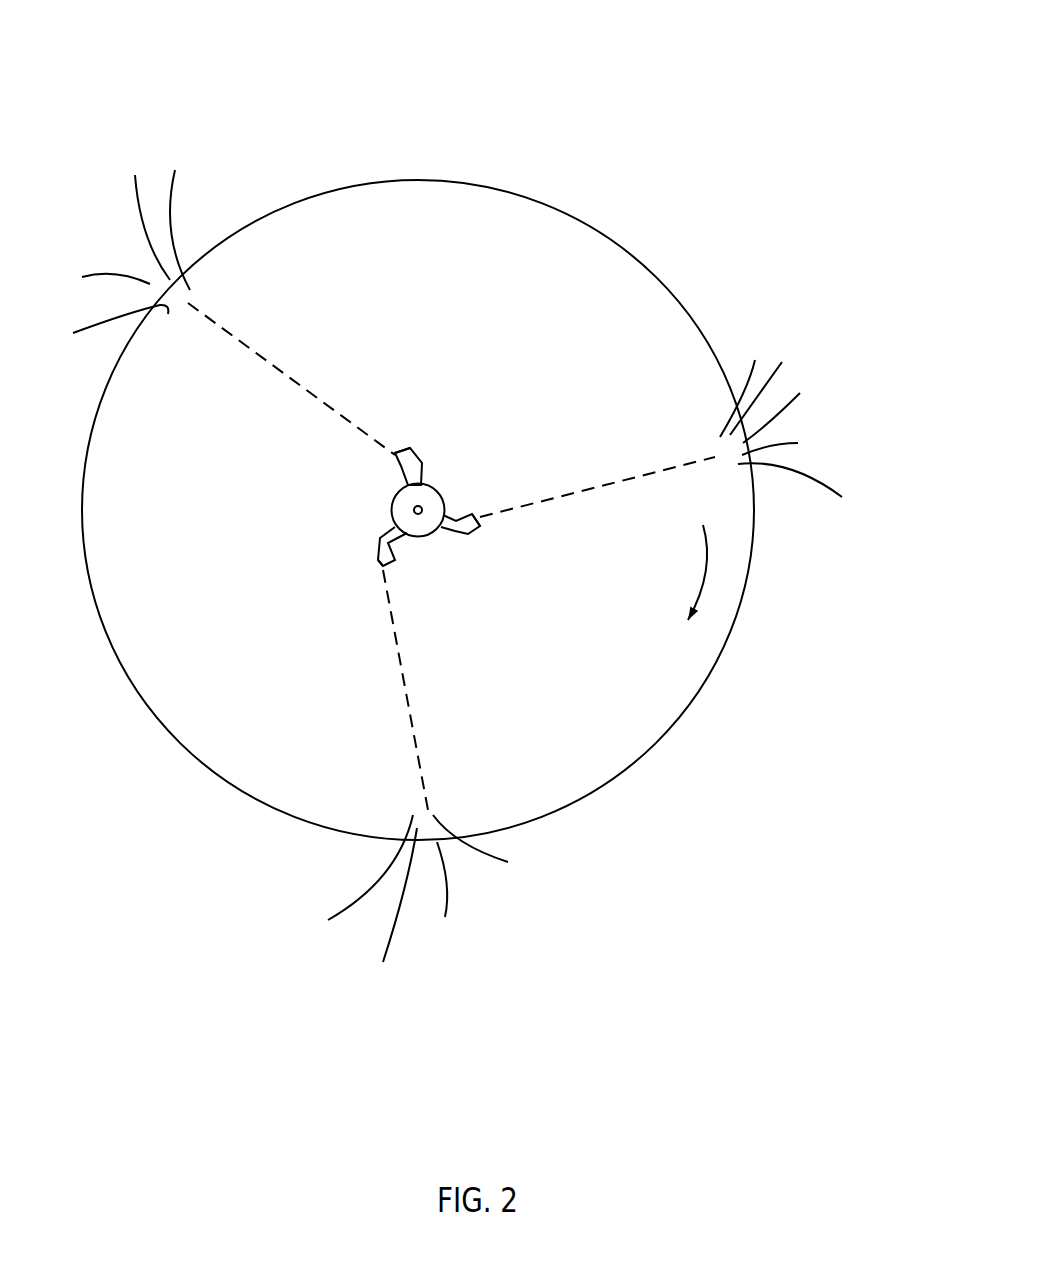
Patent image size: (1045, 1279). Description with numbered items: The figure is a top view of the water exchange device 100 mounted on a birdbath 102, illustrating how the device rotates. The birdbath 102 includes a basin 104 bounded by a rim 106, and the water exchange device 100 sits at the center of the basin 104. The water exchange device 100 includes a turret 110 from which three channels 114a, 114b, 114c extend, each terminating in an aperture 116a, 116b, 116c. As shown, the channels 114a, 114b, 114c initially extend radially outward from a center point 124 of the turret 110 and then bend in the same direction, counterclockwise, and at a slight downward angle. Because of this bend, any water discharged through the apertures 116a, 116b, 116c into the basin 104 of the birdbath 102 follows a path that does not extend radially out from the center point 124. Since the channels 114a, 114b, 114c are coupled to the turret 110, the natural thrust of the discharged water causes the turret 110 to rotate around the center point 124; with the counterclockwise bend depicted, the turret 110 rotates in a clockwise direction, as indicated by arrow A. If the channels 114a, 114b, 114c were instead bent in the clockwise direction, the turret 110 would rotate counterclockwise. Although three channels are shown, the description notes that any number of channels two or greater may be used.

The water exchange device 100 is at (421, 513).
The birdbath 102 is at (457, 482).
The basin 104 is at (633, 297).
The rim 106 is at (379, 180).
The turret 110 is at (438, 507).
The channel 114a is at (406, 450).
The channel 114b is at (470, 534).
The channel 114c is at (377, 550).
The aperture 116a is at (392, 457).
The aperture 116b is at (481, 516).
The aperture 116c is at (380, 568).
The center point 124 is at (418, 506).